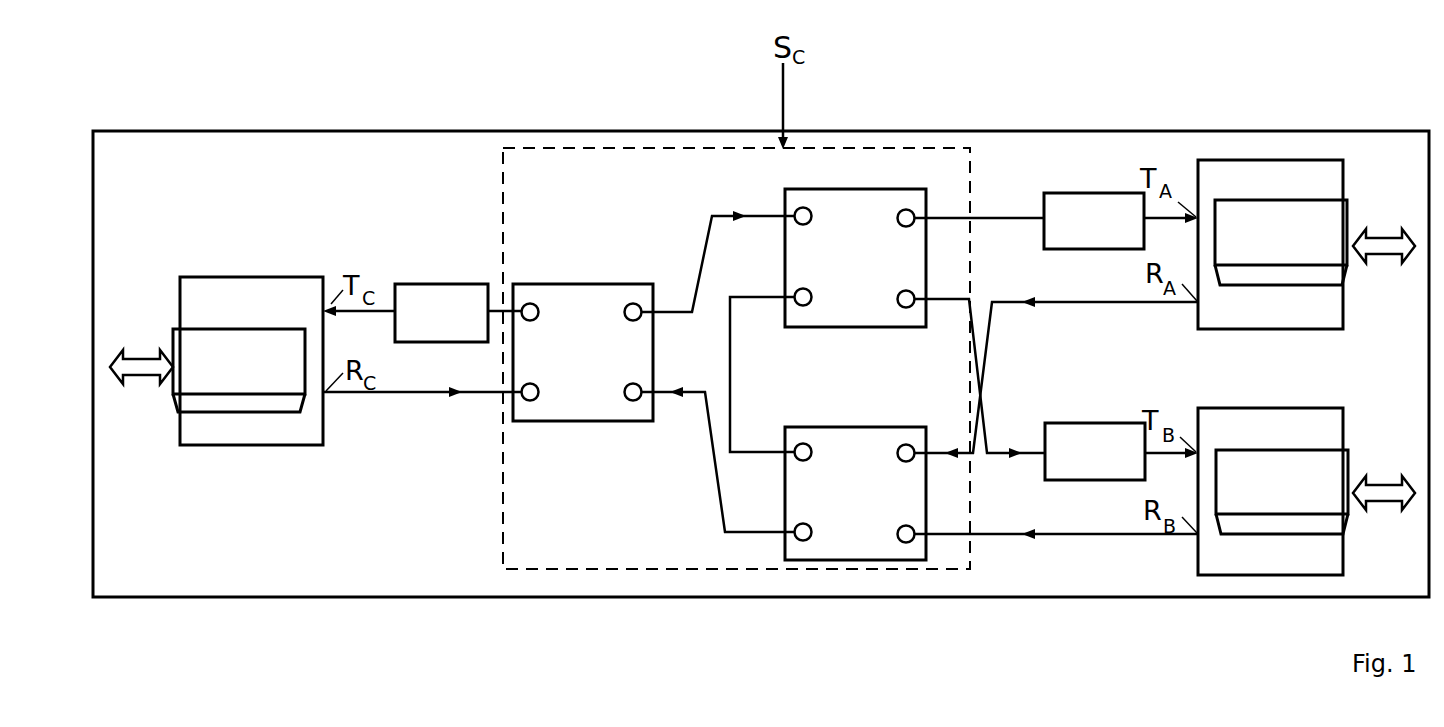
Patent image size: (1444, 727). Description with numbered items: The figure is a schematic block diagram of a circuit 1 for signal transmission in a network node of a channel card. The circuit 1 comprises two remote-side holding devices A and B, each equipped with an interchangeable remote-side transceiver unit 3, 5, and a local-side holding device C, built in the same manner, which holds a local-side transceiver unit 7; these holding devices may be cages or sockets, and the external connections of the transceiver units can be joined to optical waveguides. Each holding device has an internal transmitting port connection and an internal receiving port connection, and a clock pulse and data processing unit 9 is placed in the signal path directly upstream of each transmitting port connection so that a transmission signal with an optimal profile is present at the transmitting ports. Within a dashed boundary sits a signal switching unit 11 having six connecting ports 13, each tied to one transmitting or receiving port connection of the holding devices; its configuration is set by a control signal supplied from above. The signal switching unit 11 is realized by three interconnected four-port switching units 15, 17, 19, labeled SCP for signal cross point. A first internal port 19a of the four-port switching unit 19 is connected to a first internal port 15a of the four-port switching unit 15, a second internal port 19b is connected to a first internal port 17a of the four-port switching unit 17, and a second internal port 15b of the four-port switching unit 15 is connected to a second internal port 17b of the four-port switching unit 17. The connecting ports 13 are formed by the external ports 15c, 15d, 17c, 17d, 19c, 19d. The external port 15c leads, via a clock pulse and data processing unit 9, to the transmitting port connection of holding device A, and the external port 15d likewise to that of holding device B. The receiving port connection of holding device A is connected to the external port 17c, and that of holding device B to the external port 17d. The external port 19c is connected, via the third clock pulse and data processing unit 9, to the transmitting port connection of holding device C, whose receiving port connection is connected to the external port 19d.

The circuit 1 is at (1112, 124).
The remote-side transceiver unit 3 is at (1348, 210).
The remote-side transceiver unit 5 is at (1348, 462).
The local-side transceiver unit 7 is at (303, 403).
The clock pulse and data processing unit 9 is at (428, 293).
The signal switching unit 11 is at (583, 148).
The connecting port 13 is at (500, 309).
The four-port switching unit 15 is at (858, 307).
The first internal port 15a is at (783, 207).
The second internal port 15b is at (783, 293).
The external port 15c is at (927, 208).
The external port 15d is at (927, 307).
The four-port switching unit 17 is at (862, 445).
The first internal port 17a is at (783, 527).
The second internal port 17b is at (783, 447).
The external port 17c is at (927, 452).
The external port 17d is at (927, 530).
The four-port switching unit 19 is at (585, 408).
The first internal port 19a is at (655, 303).
The second internal port 19b is at (657, 402).
The external port 19c is at (515, 300).
The external port 19d is at (513, 403).